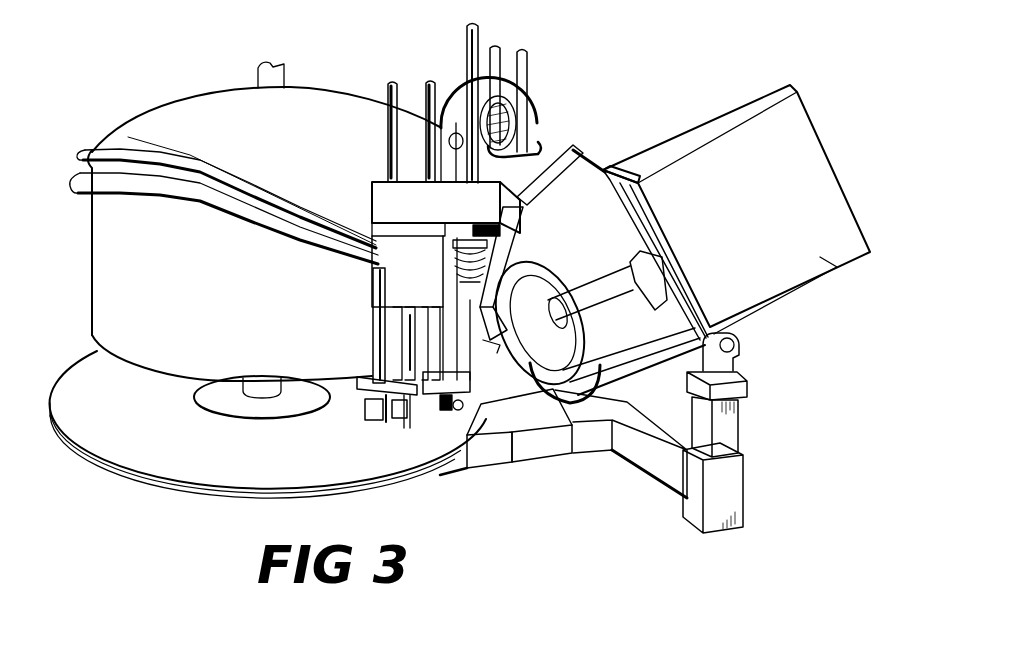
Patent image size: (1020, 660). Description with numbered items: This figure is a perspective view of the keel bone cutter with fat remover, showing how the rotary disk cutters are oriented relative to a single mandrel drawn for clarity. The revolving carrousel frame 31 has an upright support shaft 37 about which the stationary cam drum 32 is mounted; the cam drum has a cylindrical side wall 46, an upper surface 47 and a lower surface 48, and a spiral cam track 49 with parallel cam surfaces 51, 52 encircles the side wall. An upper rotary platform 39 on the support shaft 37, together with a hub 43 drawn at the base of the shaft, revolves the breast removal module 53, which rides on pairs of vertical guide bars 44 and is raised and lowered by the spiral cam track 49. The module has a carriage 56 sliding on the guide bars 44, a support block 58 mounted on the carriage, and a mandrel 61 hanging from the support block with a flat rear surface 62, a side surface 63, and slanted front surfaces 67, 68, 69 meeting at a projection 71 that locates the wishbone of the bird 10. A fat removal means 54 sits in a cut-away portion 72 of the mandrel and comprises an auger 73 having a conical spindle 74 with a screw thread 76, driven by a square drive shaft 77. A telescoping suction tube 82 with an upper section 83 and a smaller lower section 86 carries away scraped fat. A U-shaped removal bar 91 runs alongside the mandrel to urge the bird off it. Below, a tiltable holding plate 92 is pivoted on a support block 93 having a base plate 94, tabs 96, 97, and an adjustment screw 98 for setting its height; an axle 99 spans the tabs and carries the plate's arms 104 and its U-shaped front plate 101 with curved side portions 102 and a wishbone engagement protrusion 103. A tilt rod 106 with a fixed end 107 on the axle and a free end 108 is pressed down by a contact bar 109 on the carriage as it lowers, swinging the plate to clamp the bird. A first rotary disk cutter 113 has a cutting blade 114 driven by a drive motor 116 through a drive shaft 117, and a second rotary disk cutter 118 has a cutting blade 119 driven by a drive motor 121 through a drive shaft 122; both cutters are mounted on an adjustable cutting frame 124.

The bird 10 is at (104, 539).
The revolving carrousel frame 31 is at (242, 214).
The stationary cam drum 32 is at (92, 297).
The support shaft 37 is at (250, 385).
The upper rotary platform 39 is at (65, 440).
The hub 43 is at (233, 410).
The vertical guide bars 44 is at (405, 82).
The cylindrical side wall 46 is at (154, 290).
The upper surface 47 is at (135, 125).
The lower surface 48 is at (104, 349).
The spiral cam track 49 is at (211, 190).
The cam surface 51 is at (142, 152).
The cam surface 52 is at (168, 200).
The breast removal module 53 is at (308, 290).
The fat removal means 54 is at (527, 222).
The carriage 56 is at (325, 220).
The support block 58 is at (404, 214).
The mandrel 61 is at (528, 242).
The rear surface 62 is at (430, 298).
The side surface 63 is at (465, 305).
The slanted front surface 67 is at (540, 321).
The slanted front surface 68 is at (522, 285).
The slanted front surface 69 is at (580, 330).
The projection 71 is at (548, 300).
The cut-away portion 72 is at (516, 242).
The auger 73 is at (483, 224).
The spindle 74 is at (462, 240).
The screw thread 76 is at (453, 248).
The square drive shaft 77 is at (466, 46).
The telescoping suction tube 82 is at (408, 340).
The upper section 83 is at (372, 307).
The lower section 86 is at (426, 350).
The removal bar 91 is at (530, 60).
The tiltable holding plate 92 is at (504, 400).
The support block 93 is at (371, 422).
The base plate 94 is at (390, 428).
The tab 96 is at (446, 412).
The tab 97 is at (448, 360).
The adjustment screw 98 is at (460, 412).
The axle 99 is at (388, 425).
The front plate 101 is at (520, 425).
The curved side portions 102 is at (612, 386).
The wishbone engagement protrusion 103 is at (580, 436).
The arms 104 is at (476, 453).
The tilt rod 106 is at (375, 438).
The fixed end 107 is at (362, 380).
The free end 108 is at (408, 430).
The contact bar 109 is at (396, 330).
The first rotary disk cutter 113 is at (794, 338).
The cutting blade 114 is at (616, 351).
The drive motor 116 is at (766, 219).
The drive shaft 117 is at (640, 255).
The second rotary disk cutter 118 is at (707, 234).
The cutting blade 119 is at (460, 115).
The drive motor 121 is at (603, 147).
The drive shaft 122 is at (548, 157).
The adjustable cutting frame 124 is at (652, 463).